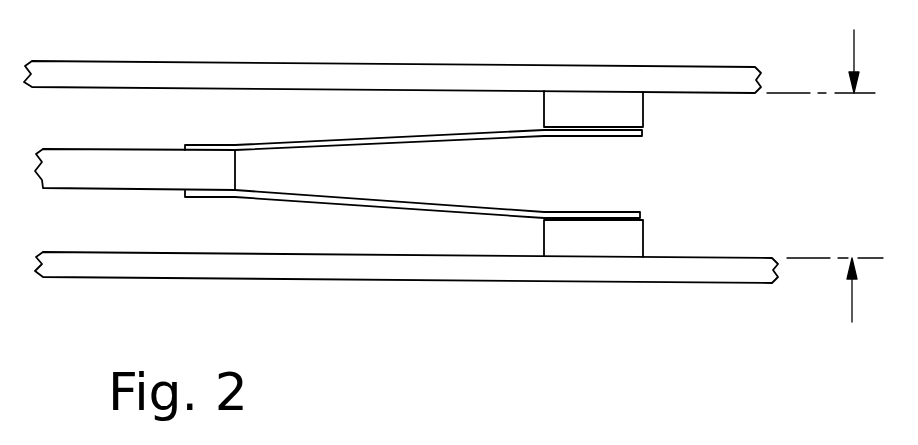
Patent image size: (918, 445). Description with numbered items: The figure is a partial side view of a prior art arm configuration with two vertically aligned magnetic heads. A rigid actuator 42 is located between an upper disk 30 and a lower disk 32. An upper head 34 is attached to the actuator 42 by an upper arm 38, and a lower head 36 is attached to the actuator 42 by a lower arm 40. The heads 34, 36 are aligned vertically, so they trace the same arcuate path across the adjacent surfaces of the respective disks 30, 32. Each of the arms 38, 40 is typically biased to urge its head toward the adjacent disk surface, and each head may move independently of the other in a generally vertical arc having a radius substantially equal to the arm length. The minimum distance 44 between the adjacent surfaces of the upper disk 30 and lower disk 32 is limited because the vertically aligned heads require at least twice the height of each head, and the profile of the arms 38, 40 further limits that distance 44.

The upper disk 30 is at (497, 63).
The lower disk 32 is at (503, 282).
The upper head 34 is at (645, 107).
The lower head 36 is at (647, 240).
The upper arm 38 is at (328, 145).
The lower arm 40 is at (373, 197).
The rigid actuator 42 is at (82, 150).
The minimum distance 44 is at (825, 176).